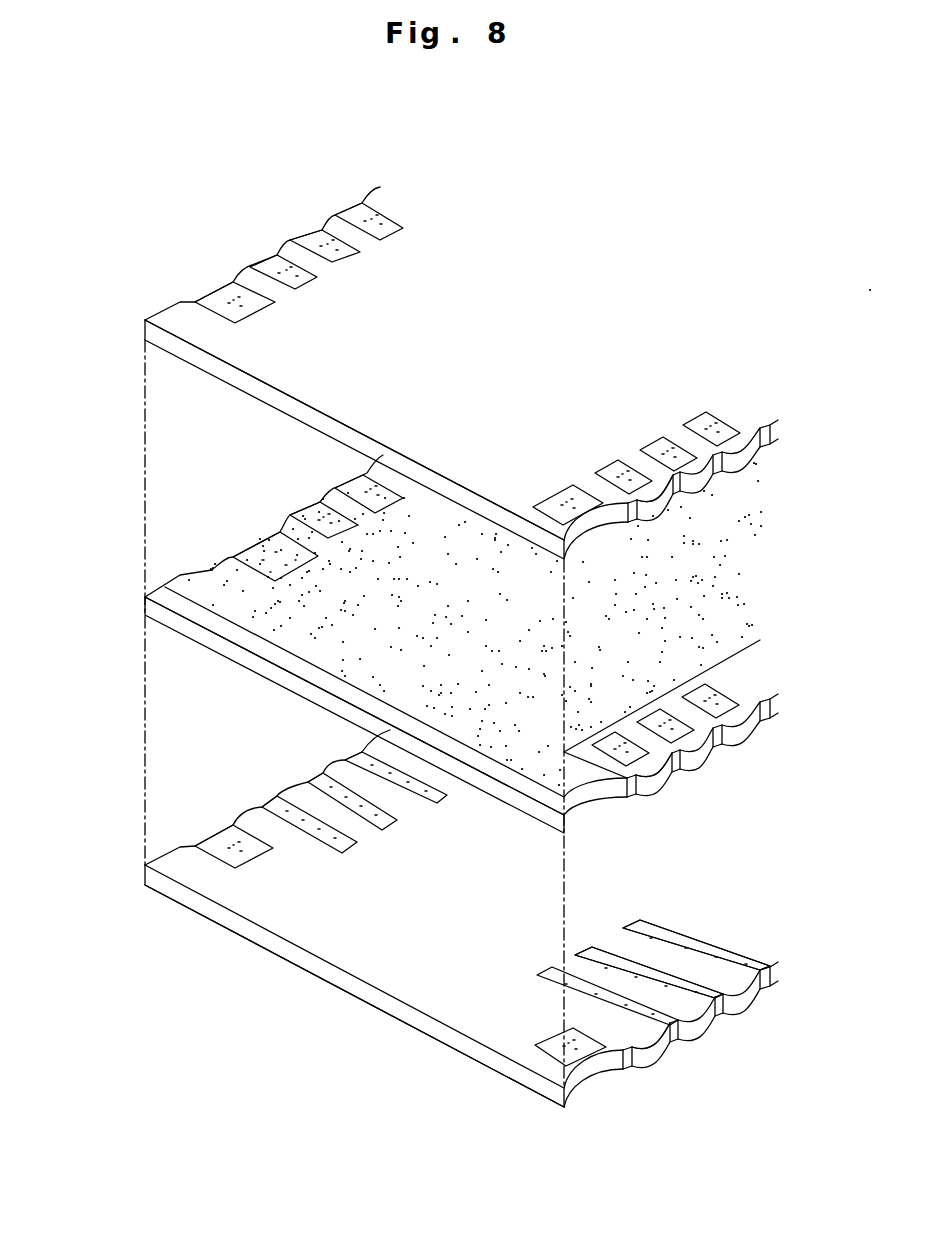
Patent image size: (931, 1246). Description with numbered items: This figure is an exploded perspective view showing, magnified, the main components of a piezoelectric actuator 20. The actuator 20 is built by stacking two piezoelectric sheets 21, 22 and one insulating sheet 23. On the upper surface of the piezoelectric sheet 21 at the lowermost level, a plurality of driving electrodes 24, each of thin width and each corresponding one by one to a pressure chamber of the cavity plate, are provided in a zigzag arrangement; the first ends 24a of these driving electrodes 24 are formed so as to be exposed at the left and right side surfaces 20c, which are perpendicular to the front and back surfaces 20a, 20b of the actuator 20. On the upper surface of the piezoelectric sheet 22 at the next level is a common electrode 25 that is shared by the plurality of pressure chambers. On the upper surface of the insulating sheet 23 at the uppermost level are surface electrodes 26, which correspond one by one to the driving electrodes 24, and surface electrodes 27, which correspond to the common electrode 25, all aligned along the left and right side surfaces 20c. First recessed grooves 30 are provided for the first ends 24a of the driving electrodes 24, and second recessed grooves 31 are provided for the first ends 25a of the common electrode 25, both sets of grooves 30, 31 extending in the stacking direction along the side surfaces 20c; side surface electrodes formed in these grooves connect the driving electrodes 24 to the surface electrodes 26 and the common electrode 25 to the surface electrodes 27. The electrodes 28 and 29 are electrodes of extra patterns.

The piezoelectric actuator 20 is at (68, 453).
The front surface 20a is at (487, 347).
The back surface 20b is at (430, 1030).
The left and right side surfaces 20c is at (658, 515).
The piezoelectric sheet 21 is at (159, 904).
The piezoelectric sheet 22 is at (169, 641).
The insulating sheet 23 is at (221, 432).
The driving electrodes 24 is at (432, 800).
The first ends of the driving electrodes 24a is at (730, 972).
The common electrode 25 is at (380, 650).
The first ends of the common electrode 25a is at (236, 614).
The surface electrodes 26 is at (385, 225).
The surface electrodes 27 is at (255, 305).
The electrodes of extra patterns 28 is at (232, 850).
The electrodes of extra patterns 29 is at (387, 508).
The first recessed grooves 30 is at (290, 214).
The second recessed grooves 31 is at (202, 278).